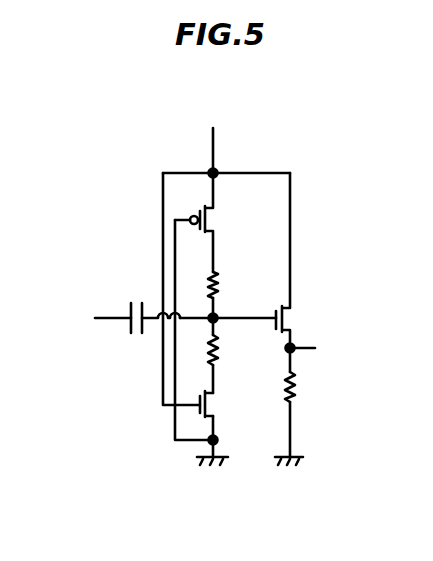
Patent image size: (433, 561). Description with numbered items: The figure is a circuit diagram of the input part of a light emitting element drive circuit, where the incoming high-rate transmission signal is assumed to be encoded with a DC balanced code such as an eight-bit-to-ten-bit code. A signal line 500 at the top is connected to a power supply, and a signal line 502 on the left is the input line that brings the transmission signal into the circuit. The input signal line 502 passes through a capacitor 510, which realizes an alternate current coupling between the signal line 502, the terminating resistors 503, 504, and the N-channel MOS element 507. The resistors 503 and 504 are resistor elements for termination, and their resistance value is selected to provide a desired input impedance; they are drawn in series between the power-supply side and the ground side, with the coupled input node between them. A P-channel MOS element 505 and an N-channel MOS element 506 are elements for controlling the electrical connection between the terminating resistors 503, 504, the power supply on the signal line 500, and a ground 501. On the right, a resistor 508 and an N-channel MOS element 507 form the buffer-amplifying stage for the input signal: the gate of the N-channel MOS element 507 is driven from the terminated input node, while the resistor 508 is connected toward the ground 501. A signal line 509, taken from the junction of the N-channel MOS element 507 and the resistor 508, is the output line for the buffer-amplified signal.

The signal line 500 is at (222, 145).
The ground 501 is at (205, 467).
The signal line 502 is at (98, 316).
The resistor 503 is at (221, 278).
The resistor 504 is at (222, 352).
The P-channel MOS element 505 is at (190, 208).
The N-channel MOS element 506 is at (193, 437).
The N-channel MOS element 507 is at (295, 310).
The resistor 508 is at (297, 400).
The signal line 509 is at (308, 348).
The capacitor 510 is at (133, 338).